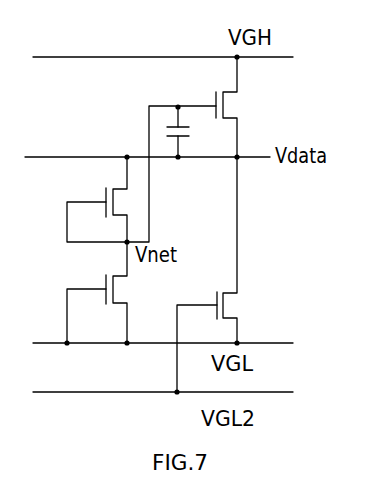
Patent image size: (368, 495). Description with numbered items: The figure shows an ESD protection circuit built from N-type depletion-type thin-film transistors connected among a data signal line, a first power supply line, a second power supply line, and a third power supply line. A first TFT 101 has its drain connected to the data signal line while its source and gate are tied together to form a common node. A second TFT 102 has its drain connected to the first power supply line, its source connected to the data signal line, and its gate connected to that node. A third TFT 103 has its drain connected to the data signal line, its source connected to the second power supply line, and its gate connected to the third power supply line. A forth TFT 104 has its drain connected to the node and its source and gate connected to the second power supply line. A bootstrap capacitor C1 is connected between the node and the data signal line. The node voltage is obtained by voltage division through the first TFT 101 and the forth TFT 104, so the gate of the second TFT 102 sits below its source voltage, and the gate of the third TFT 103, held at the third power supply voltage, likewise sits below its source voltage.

The first TFT 101 is at (98, 193).
The second TFT 102 is at (238, 103).
The third TFT 103 is at (238, 307).
The forth TFT 104 is at (139, 288).
The bootstrap capacitor C1 is at (197, 129).